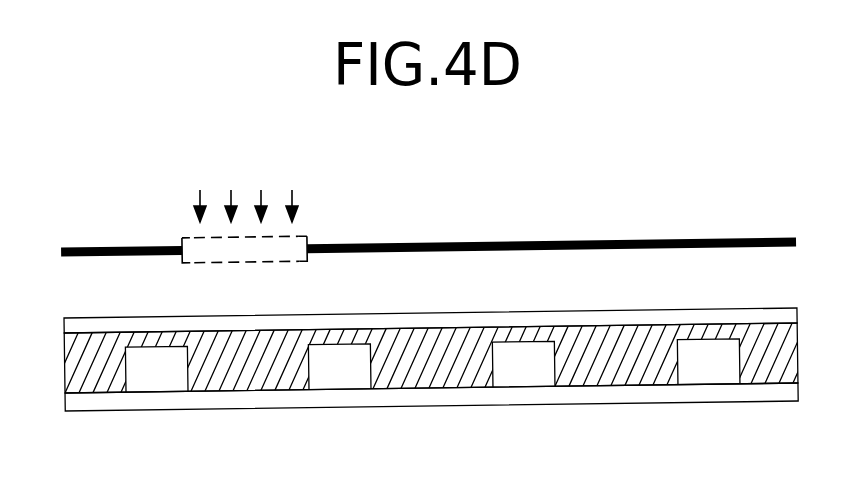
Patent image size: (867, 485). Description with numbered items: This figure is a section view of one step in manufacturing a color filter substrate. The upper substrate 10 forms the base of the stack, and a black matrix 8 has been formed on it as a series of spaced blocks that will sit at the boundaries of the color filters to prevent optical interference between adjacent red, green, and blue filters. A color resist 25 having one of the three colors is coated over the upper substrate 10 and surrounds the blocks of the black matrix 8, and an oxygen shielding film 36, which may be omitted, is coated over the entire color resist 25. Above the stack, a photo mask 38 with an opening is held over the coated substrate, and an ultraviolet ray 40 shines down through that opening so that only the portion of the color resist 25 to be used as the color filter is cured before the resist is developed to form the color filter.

The black matrix 8 is at (157, 385).
The upper substrate 10 is at (797, 395).
The color resist 25 is at (797, 355).
The oxygen shielding film 36 is at (797, 314).
The photo mask 38 is at (725, 238).
The ultraviolet ray 40 is at (292, 208).